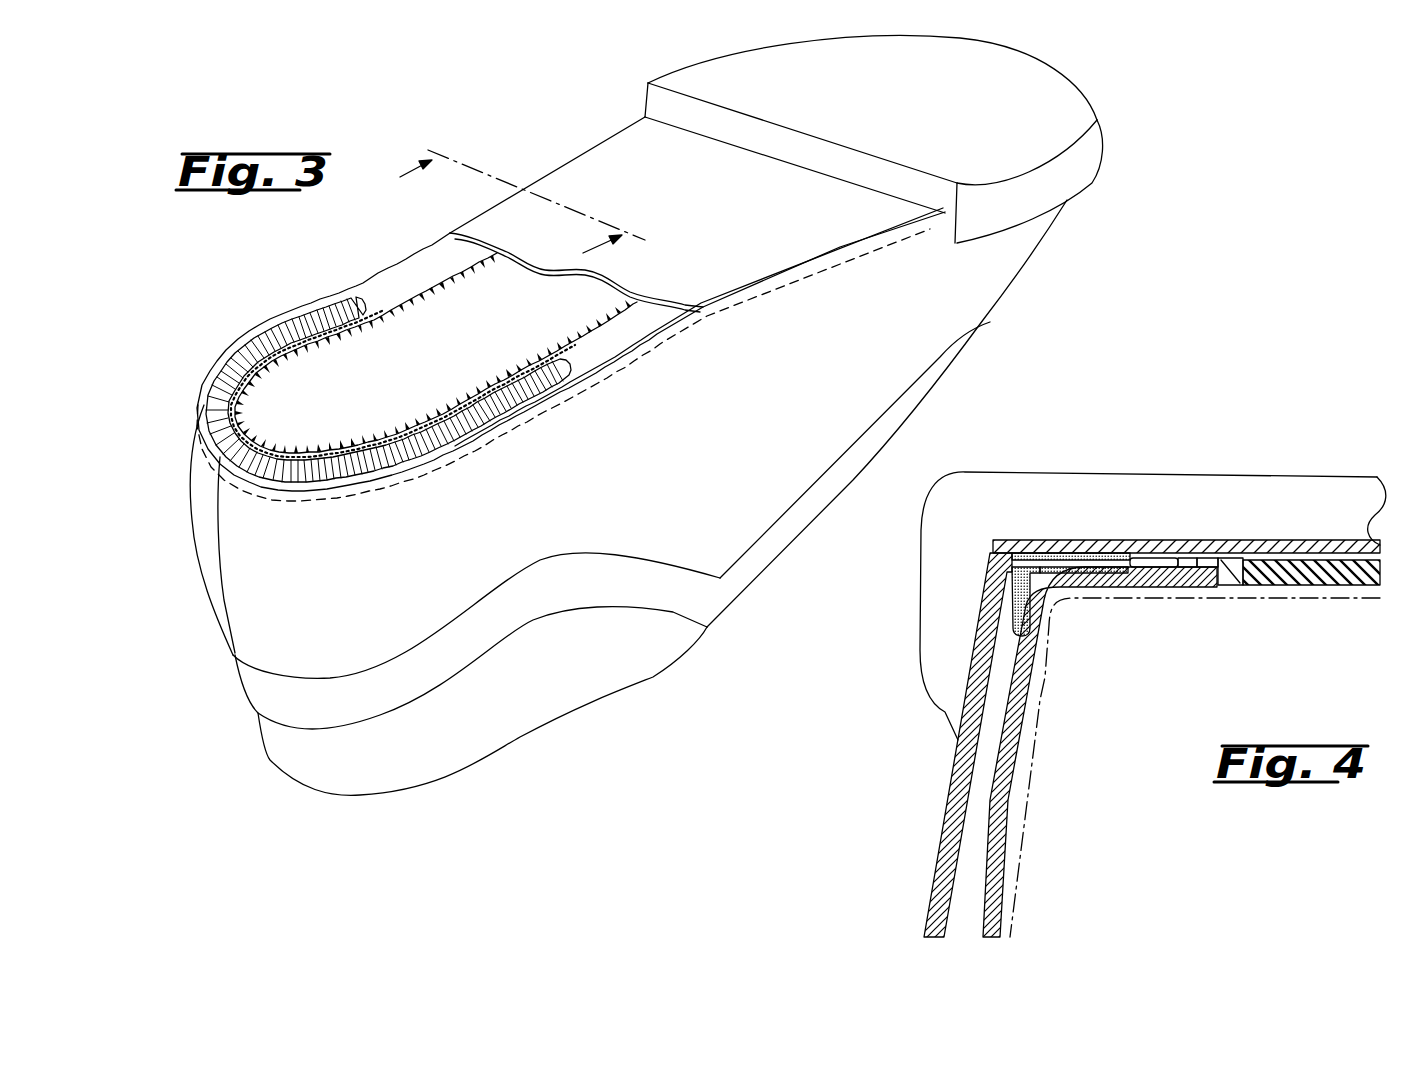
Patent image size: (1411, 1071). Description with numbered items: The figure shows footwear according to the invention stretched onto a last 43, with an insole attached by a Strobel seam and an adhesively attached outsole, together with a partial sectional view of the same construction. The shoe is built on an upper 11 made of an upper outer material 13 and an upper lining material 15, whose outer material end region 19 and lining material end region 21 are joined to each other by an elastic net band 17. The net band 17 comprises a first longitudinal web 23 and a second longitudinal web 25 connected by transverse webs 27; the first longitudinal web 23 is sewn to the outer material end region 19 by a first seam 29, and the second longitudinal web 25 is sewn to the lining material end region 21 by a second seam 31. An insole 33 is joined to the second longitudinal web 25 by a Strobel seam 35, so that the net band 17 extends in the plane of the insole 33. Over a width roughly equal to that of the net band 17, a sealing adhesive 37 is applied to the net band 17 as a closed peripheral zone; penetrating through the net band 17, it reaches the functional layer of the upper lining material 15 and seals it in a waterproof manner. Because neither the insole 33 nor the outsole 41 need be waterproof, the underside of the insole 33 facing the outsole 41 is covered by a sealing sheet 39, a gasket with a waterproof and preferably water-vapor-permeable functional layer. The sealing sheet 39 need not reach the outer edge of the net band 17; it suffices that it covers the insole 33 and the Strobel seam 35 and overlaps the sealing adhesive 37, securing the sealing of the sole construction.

In FIG. 3, the upper 11 is at (197, 607).
In FIG. 3, the upper outer material 13 is at (1000, 276).
In FIG. 4, the upper outer material 13 is at (950, 800).
In FIG. 4, the upper lining material 15 is at (1007, 773).
In FIG. 3, the elastic net band 17 is at (423, 455).
In FIG. 4, the elastic net band 17 is at (1035, 665).
In FIG. 3, the outer material end region 19 is at (190, 452).
In FIG. 4, the lining material end region 21 is at (1128, 585).
In FIG. 4, the first longitudinal web 23 is at (1005, 637).
In FIG. 3, the second longitudinal web 25 is at (292, 352).
In FIG. 4, the second longitudinal web 25 is at (1157, 563).
In FIG. 4, the transverse webs 27 is at (1053, 550).
In FIG. 3, the first seam 29 is at (510, 430).
In FIG. 4, the first seam 29 is at (993, 563).
In FIG. 3, the second seam 31 is at (293, 455).
In FIG. 4, the second seam 31 is at (1170, 580).
In FIG. 3, the insole 33 is at (533, 323).
In FIG. 4, the insole 33 is at (1333, 577).
In FIG. 3, the Strobel seam 35 is at (378, 437).
In FIG. 4, the Strobel seam 35 is at (1223, 587).
In FIG. 3, the sealing adhesive 37 is at (438, 265).
In FIG. 4, the sealing adhesive 37 is at (1092, 545).
In FIG. 3, the sealing sheet 39 is at (592, 172).
In FIG. 4, the sealing sheet 39 is at (1293, 547).
In FIG. 3, the outsole 41 is at (1065, 117).
In FIG. 4, the outsole 41 is at (937, 582).
In FIG. 3, the last 43 is at (497, 722).
In FIG. 4, the last 43 is at (1040, 732).